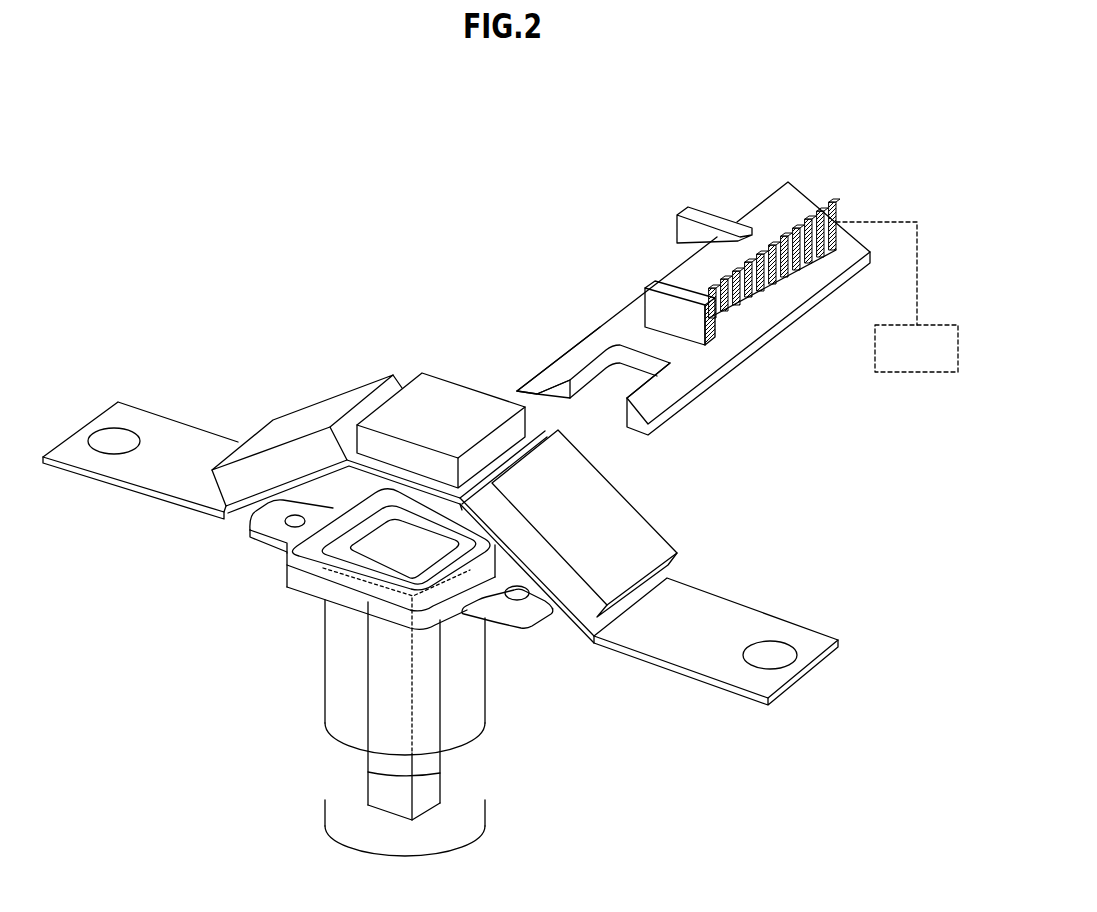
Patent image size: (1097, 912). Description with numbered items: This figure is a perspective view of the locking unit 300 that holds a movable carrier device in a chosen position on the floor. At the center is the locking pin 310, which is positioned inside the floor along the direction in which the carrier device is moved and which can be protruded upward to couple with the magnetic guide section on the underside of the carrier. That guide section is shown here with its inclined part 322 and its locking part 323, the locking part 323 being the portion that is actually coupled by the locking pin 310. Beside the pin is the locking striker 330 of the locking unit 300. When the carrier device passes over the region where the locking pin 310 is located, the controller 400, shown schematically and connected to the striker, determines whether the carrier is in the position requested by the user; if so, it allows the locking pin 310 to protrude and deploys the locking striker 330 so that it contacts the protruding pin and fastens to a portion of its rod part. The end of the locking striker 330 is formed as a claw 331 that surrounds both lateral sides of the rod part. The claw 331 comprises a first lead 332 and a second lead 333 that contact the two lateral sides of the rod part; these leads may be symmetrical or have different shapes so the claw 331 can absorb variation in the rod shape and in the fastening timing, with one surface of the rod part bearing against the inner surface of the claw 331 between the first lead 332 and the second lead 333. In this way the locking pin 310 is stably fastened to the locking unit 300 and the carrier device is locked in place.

The locking unit 300 is at (410, 206).
The locking pin 310 is at (466, 710).
The inclined part 322 is at (307, 420).
The locking part 323 is at (436, 393).
The locking striker 330 is at (770, 175).
The claw 331 is at (589, 332).
The first lead 332 is at (668, 387).
The second lead 333 is at (537, 368).
The controller 400 is at (910, 373).